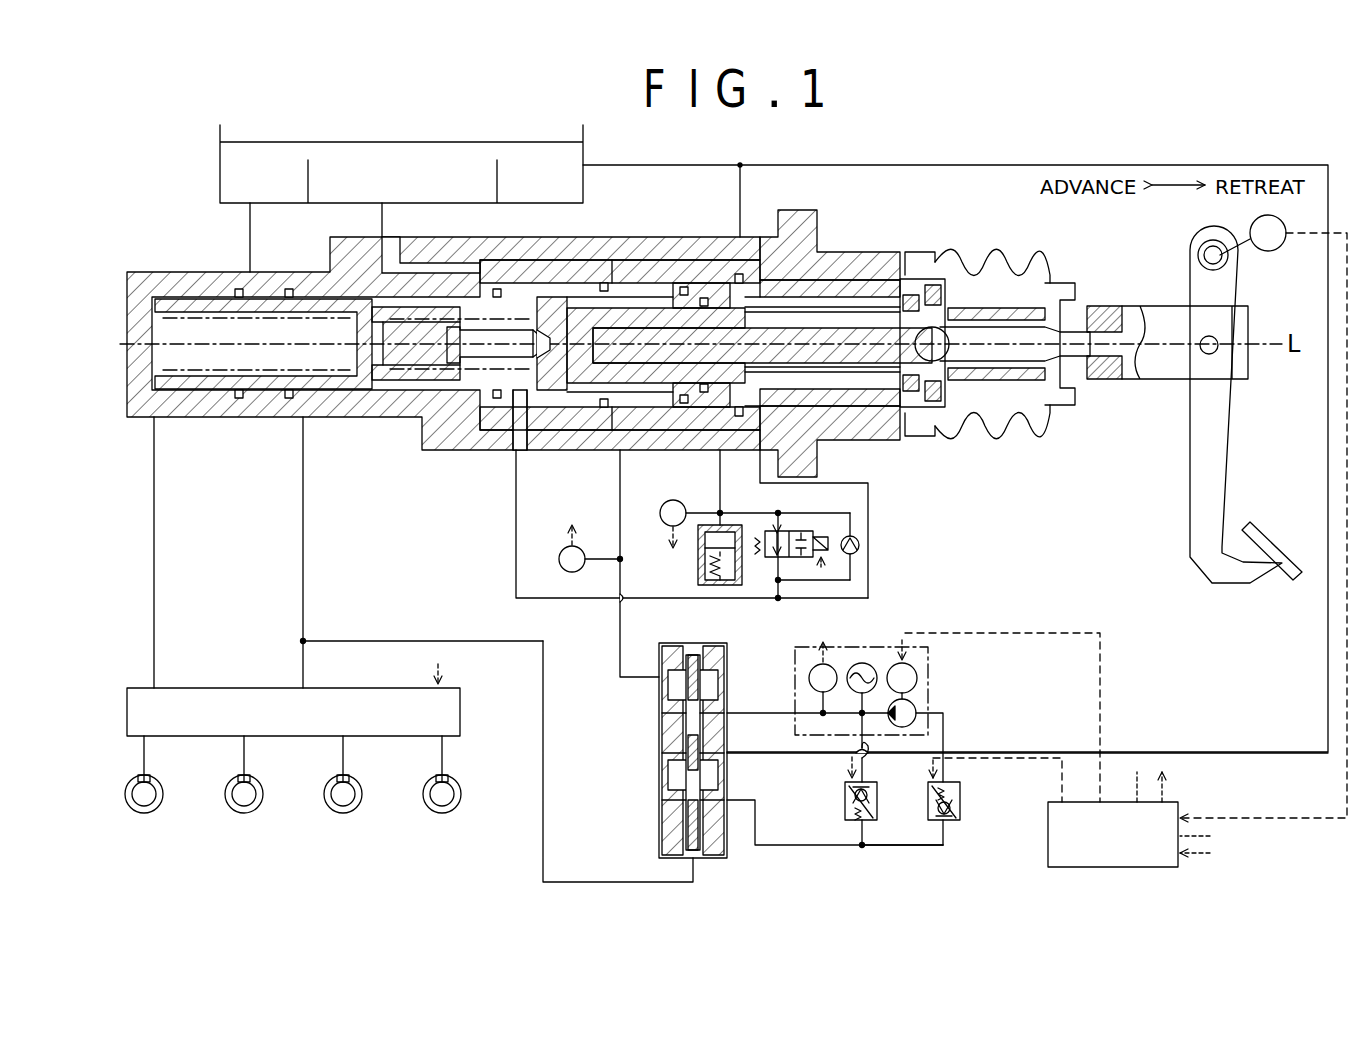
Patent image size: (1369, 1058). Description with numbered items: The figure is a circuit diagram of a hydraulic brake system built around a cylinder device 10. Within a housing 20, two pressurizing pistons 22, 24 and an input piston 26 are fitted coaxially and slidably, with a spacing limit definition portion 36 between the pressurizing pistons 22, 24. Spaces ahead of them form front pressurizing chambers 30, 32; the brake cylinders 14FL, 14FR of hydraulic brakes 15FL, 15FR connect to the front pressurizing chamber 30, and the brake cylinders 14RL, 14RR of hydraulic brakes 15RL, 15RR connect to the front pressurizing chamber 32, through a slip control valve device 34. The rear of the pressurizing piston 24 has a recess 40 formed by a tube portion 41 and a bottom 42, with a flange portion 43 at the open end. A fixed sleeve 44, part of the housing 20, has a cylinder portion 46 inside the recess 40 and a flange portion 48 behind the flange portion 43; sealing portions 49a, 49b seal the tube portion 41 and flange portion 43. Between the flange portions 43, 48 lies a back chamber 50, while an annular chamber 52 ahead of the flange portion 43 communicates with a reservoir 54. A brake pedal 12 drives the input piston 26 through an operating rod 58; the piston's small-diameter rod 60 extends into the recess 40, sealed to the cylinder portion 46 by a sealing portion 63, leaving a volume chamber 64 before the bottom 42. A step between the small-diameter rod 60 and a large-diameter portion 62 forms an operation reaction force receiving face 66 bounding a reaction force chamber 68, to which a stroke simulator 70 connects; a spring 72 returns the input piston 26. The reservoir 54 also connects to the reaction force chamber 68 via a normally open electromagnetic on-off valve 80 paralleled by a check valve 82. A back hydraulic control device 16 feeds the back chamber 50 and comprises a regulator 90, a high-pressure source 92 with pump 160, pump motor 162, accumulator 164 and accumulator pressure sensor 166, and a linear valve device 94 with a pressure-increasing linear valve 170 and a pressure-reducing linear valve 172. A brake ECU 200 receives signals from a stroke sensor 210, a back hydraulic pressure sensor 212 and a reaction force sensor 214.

The cylinder device 10 is at (876, 182).
The brake pedal 12 is at (1276, 547).
The brake cylinder 14FR is at (150, 778).
The brake cylinder 14FL is at (250, 778).
The brake cylinder 14RL is at (349, 778).
The brake cylinder 14RR is at (448, 778).
The hydraulic brake 15FL is at (124, 780).
The hydraulic brake 15FR is at (213, 782).
The hydraulic brake 15RL is at (310, 782).
The hydraulic brake 15RR is at (412, 782).
The back hydraulic control device 16 is at (920, 615).
The housing 20 is at (157, 285).
The pressurizing piston 22 is at (378, 380).
The pressurizing piston 24 is at (545, 300).
The input piston 26 is at (998, 400).
The front pressurizing chamber 30 is at (195, 298).
The front pressurizing chamber 32 is at (420, 380).
The slip control valve device 34 is at (345, 690).
The spacing limit definition portion 36 is at (484, 325).
The recess 40 is at (615, 392).
The tube portion 41 is at (650, 400).
The bottom 42 is at (575, 392).
The flange portion 43 is at (705, 450).
The sleeve 44 is at (612, 262).
The cylinder portion 46 is at (680, 300).
The flange portion 48 is at (770, 272).
The sealing portion 49a is at (704, 298).
The sealing portion 49b is at (684, 287).
The back chamber 50 is at (739, 274).
The annular chamber 52 is at (520, 450).
The reservoir 54 is at (220, 158).
The operating rod 58 is at (1060, 318).
The small-diameter rod 60 is at (905, 328).
The large-diameter portion 62 is at (985, 327).
The sealing portion 63 is at (604, 300).
The volume chamber 64 is at (545, 372).
The operation reaction force receiving face 66 is at (912, 300).
The reaction force chamber 68 is at (800, 288).
The stroke simulator 70 is at (698, 570).
The spring 72 is at (940, 328).
The electromagnetic on-off valve 80 is at (795, 531).
The check valve 82 is at (858, 540).
The regulator 90 is at (652, 777).
The high-pressure source 92 is at (945, 692).
The linear valve device 94 is at (903, 850).
The pump 160 is at (917, 713).
The pump motor 162 is at (917, 672).
The accumulator 164 is at (868, 660).
The accumulator pressure sensor 166 is at (809, 678).
The pressure-increasing linear valve 170 is at (845, 810).
The pressure-reducing linear valve 172 is at (928, 812).
The brake ECU 200 is at (1170, 862).
The stroke sensor 210 is at (1284, 246).
The back hydraulic pressure sensor 212 is at (559, 558).
The reaction force sensor 214 is at (660, 514).